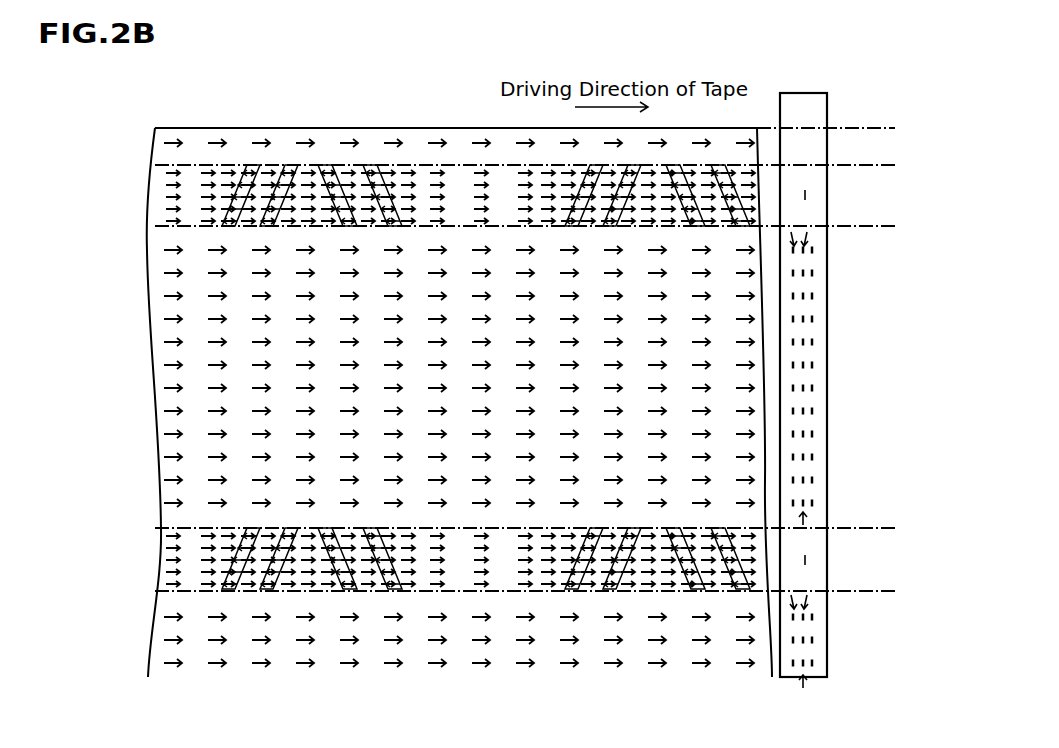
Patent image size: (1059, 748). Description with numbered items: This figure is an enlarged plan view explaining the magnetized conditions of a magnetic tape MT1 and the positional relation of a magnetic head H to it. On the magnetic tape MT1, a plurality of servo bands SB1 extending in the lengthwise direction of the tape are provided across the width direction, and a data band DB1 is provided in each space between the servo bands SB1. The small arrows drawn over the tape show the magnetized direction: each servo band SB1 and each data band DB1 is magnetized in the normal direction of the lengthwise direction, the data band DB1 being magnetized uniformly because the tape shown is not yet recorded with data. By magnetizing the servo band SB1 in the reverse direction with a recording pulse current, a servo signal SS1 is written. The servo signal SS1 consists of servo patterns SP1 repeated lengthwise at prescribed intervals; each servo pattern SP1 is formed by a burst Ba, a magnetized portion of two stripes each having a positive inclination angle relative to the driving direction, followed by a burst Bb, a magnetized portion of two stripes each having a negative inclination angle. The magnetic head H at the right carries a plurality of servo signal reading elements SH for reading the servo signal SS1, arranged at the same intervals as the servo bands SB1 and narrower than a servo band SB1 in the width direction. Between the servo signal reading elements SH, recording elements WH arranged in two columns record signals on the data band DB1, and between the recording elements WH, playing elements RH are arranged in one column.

The magnetic tape MT1 is at (200, 128).
The servo pattern SP1 is at (481, 322).
The burst Ba is at (300, 165).
The burst Bb is at (360, 159).
The servo band SB1 is at (495, 167).
The servo signal SS1 is at (525, 322).
The data band DB1 is at (768, 403).
The magnetic head H is at (832, 369).
The servo signal reading element SH is at (806, 196).
The recording element WH is at (795, 237).
The playing element RH is at (803, 514).